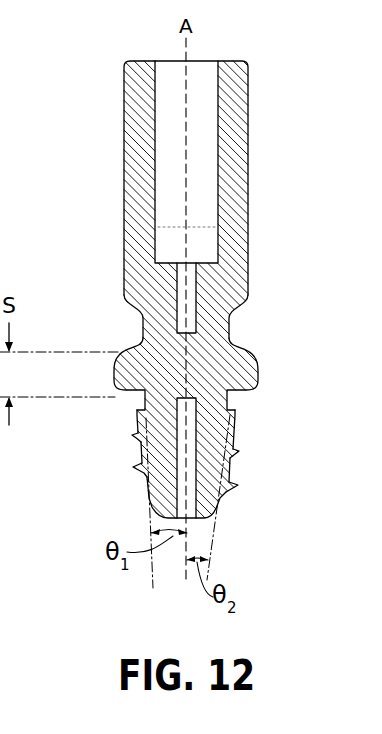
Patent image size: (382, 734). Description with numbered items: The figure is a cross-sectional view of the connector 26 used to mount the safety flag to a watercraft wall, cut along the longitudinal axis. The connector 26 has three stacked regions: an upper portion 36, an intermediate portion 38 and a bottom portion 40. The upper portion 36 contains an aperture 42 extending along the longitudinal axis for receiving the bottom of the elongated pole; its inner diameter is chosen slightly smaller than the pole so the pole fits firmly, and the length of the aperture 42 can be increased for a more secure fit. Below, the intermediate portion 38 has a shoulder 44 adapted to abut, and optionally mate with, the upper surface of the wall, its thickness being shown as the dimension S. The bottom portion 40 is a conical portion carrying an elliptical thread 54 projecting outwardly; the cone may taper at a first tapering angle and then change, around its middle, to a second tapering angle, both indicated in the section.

The connector 26 is at (91, 94).
The upper portion 36 is at (270, 63).
The intermediate portion 38 is at (180, 352).
The bottom portion 40 is at (187, 458).
The aperture 42 is at (182, 148).
The shoulder 44 is at (112, 369).
The elliptical thread 54 is at (136, 470).